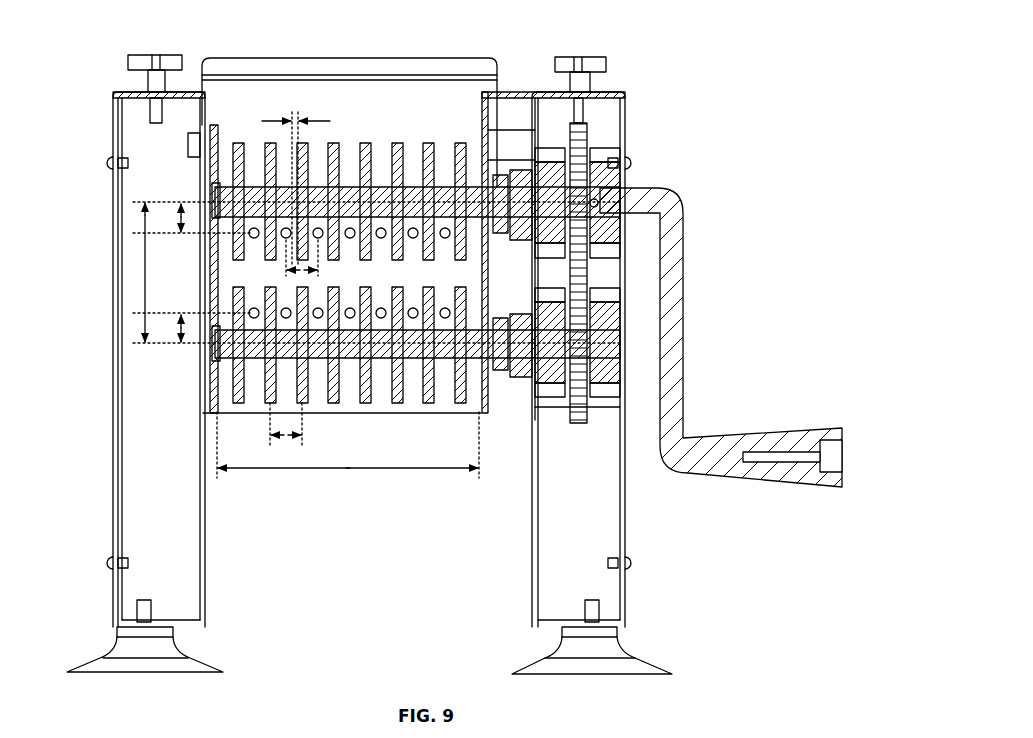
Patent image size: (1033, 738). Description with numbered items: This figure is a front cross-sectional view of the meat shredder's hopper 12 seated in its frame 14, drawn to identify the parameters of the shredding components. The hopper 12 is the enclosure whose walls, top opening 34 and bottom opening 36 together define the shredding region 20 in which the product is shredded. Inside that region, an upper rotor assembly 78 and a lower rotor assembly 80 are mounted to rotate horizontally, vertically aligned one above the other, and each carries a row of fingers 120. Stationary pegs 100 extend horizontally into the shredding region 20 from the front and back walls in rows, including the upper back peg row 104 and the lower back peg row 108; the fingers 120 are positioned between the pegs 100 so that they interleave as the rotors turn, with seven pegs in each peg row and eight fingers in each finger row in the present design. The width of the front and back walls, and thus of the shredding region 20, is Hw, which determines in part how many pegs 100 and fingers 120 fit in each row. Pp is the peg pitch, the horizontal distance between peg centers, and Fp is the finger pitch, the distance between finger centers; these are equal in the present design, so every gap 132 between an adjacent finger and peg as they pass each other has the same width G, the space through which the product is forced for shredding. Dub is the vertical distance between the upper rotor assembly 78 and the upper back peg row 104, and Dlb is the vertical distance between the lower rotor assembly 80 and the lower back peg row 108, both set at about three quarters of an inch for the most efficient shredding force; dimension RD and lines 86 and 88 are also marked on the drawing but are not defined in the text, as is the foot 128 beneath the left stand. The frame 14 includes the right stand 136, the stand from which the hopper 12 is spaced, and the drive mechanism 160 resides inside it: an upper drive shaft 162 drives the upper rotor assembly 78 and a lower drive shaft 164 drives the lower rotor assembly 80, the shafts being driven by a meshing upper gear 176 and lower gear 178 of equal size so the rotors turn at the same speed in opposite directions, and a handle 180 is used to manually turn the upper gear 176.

The hopper 12 is at (389, 57).
The frame 14 is at (113, 120).
The shredding region 20 is at (440, 112).
The top opening 34 is at (459, 97).
The bottom opening 36 is at (437, 414).
The upper rotor assembly 78 is at (238, 142).
The lower rotor assembly 80 is at (240, 405).
The upper shaft axis 86 is at (162, 198).
The lower shaft axis 88 is at (161, 350).
The stationary pegs 100 is at (254, 307).
The upper back peg row 104 is at (445, 240).
The lower back peg row 108 is at (413, 306).
The fingers 120 is at (366, 405).
The left foot 128 is at (114, 440).
The gap 132 is at (296, 175).
The right stand 136 is at (627, 507).
The drive mechanism 160 is at (653, 175).
The upper drive shaft 162 is at (524, 203).
The lower drive shaft 164 is at (524, 345).
The upper gear 176 is at (580, 134).
The lower gear 178 is at (577, 425).
The handle 180 is at (684, 252).
The gap width G is at (312, 121).
The peg pitch Pp is at (318, 278).
The finger pitch Fp is at (302, 448).
The hopper width Hw is at (375, 472).
The shaft distance RD is at (146, 277).
The upper rotor to upper back peg row distance Dub is at (178, 227).
The lower rotor to lower back peg row distance Dlb is at (178, 329).